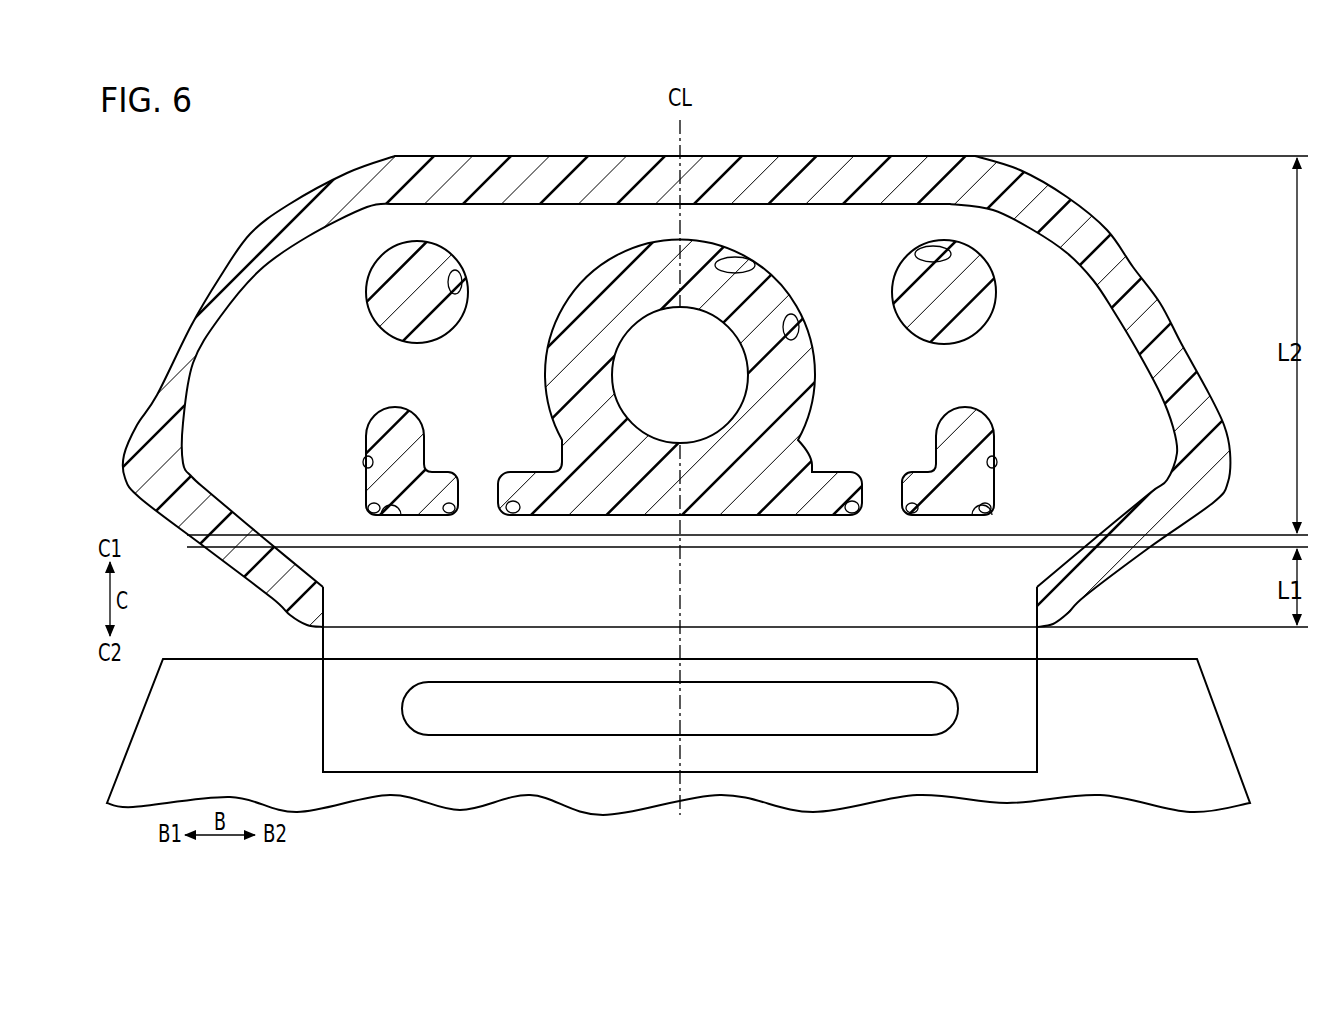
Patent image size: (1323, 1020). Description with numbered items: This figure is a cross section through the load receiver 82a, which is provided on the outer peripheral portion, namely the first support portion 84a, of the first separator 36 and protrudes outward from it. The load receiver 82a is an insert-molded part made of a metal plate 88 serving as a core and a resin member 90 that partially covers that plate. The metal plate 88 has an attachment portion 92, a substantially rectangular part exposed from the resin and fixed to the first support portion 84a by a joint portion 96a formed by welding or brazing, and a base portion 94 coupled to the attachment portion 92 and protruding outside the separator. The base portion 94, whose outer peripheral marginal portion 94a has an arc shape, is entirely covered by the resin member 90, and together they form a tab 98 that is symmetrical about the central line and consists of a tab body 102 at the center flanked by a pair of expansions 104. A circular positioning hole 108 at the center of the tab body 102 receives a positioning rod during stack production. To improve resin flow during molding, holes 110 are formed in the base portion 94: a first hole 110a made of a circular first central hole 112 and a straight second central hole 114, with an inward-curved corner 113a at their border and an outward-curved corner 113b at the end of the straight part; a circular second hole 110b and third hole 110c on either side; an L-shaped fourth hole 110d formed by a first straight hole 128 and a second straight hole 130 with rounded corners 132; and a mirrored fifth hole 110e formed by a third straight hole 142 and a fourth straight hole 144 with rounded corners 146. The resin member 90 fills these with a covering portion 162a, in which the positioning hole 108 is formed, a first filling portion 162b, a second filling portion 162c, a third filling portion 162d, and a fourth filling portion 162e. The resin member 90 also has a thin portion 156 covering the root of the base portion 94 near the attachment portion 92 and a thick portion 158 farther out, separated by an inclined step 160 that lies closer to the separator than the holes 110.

The first separator 36 is at (1226, 714).
The load receiver 82a is at (280, 182).
The first support portion 84a is at (1195, 684).
The metal plate 88 is at (453, 201).
The resin member 90 is at (390, 153).
The attachment portion 92 is at (976, 750).
The base portion 94 is at (352, 236).
The outer peripheral marginal portion 94a is at (565, 202).
The joint portion 96a is at (928, 711).
The tab 98 is at (400, 110).
The tab body 102 is at (860, 155).
The expansions 104 is at (150, 397).
The positioning hole 108 is at (652, 376).
The holes 110 is at (728, 264).
The first hole 110a is at (866, 325).
The second hole 110b is at (457, 272).
The third hole 110c is at (922, 258).
The fourth hole 110d is at (301, 455).
The fifth hole 110e is at (1062, 455).
The first central hole 112 is at (798, 331).
The corner 113a is at (560, 480).
The corner 113b is at (515, 514).
The second central hole 114 is at (813, 465).
The first straight hole 128 is at (382, 498).
The second straight hole 130 is at (364, 463).
The corners 132 is at (383, 514).
The third straight hole 142 is at (988, 498).
The fourth straight hole 144 is at (996, 463).
The corners 146 is at (913, 514).
The thin portion 156 is at (285, 599).
The thick portion 158 is at (243, 264).
The step 160 is at (655, 549).
The covering portion 162a is at (577, 316).
The first filling portion 162b is at (386, 300).
The second filling portion 162c is at (978, 306).
The third filling portion 162d is at (392, 441).
The fourth filling portion 162e is at (972, 436).